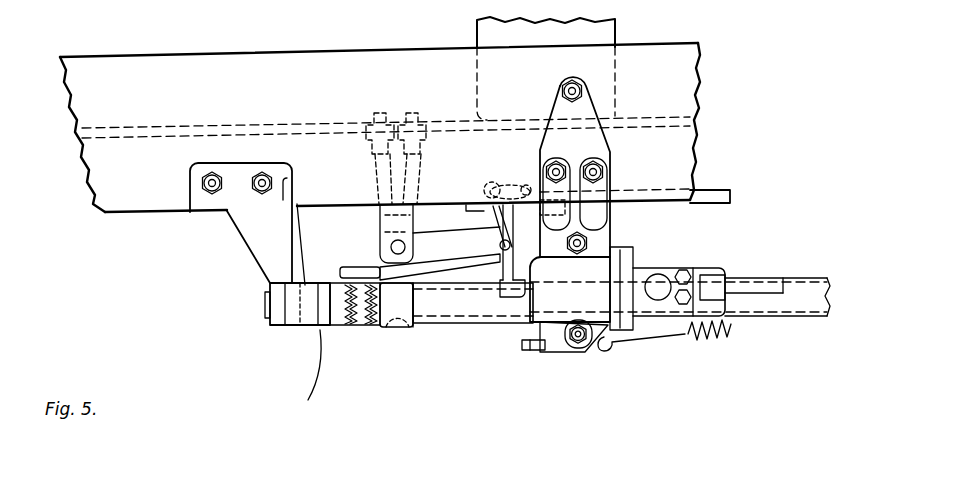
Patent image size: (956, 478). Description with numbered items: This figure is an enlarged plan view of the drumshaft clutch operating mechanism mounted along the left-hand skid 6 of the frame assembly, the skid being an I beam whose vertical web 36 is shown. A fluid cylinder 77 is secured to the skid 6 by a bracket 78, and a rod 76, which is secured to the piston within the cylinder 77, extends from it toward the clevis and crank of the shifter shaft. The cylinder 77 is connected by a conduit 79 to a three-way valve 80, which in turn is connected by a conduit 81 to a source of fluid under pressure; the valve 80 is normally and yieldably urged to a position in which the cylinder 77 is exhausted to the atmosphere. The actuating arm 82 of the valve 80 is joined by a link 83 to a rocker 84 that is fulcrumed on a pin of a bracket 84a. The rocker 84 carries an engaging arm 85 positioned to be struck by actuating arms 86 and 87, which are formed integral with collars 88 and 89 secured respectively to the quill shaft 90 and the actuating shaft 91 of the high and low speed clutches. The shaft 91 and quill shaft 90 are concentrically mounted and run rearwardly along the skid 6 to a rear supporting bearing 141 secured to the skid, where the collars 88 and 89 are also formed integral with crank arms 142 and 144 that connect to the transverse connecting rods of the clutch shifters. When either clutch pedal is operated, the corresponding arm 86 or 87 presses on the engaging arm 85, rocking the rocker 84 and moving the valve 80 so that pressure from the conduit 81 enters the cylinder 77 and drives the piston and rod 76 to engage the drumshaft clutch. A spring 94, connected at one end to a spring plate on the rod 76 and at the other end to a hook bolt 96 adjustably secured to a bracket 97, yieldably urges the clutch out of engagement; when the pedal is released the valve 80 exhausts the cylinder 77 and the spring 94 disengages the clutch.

The skid 6 is at (682, 72).
The vertical web 36 is at (162, 128).
The rod 76 is at (758, 281).
The cylinder 77 is at (540, 306).
The bracket 78 is at (600, 147).
The conduit 79 is at (500, 266).
The three-way valve 80 is at (540, 135).
The conduit 81 is at (706, 192).
The actuating arm 82 is at (510, 185).
The link 83 is at (478, 204).
The rocker 84 is at (452, 226).
The bracket 84a is at (382, 227).
The engaging arm 85 is at (352, 267).
The actuating arm 86 is at (398, 328).
The actuating arm 87 is at (336, 330).
The collar 88 is at (392, 327).
The collar 89 is at (314, 376).
The quill shaft 90 is at (459, 324).
The actuating shaft 91 is at (786, 318).
The spring 94 is at (700, 334).
The hook bolt 96 is at (612, 347).
The bracket 97 is at (545, 352).
The rear supporting bearing 141 is at (263, 255).
The crank arm 142 is at (384, 287).
The crank arm 144 is at (320, 301).